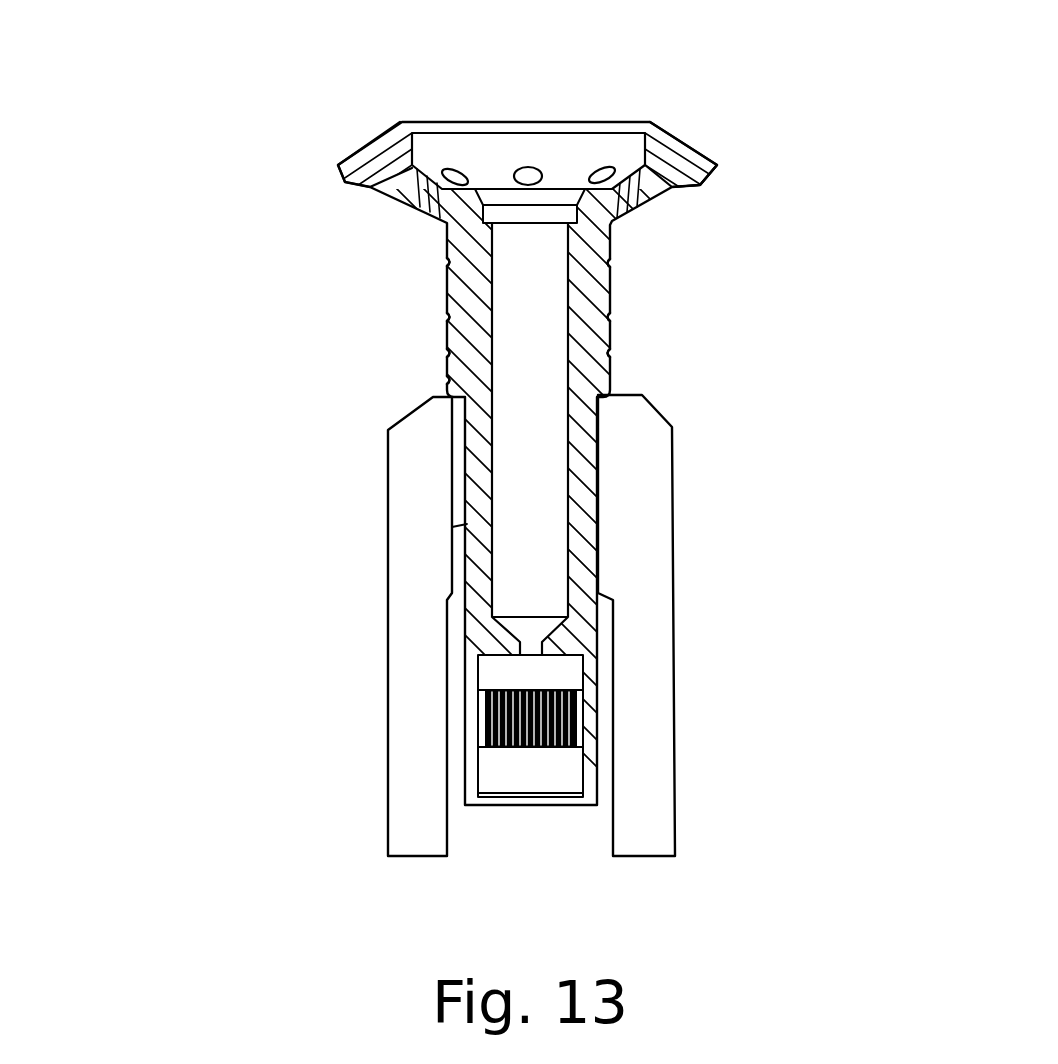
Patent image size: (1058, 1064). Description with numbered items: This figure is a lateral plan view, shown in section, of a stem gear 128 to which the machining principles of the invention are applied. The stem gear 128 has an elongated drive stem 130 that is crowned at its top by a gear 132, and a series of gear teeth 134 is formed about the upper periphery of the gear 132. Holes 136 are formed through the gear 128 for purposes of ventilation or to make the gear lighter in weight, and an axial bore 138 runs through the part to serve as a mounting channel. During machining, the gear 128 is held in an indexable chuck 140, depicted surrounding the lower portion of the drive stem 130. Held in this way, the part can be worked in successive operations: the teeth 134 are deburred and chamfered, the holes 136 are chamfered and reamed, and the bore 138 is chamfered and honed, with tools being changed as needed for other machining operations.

The stem gear 128 is at (358, 262).
The drive stem 130 is at (445, 313).
The gear 132 is at (717, 168).
The gear teeth 134 is at (713, 137).
The holes 136 is at (527, 177).
The axial bore 138 is at (527, 468).
The indexable chuck 140 is at (412, 697).